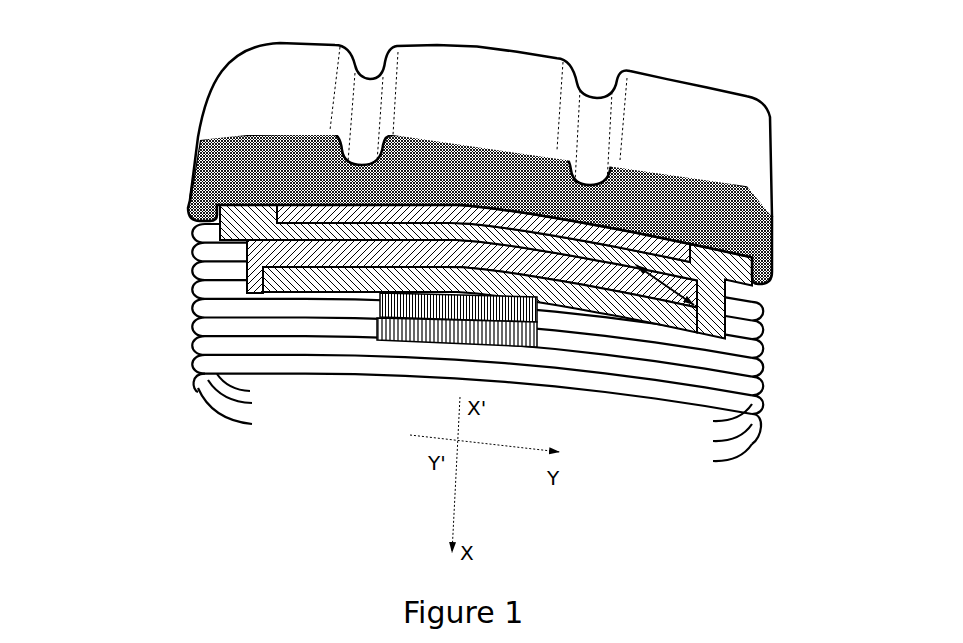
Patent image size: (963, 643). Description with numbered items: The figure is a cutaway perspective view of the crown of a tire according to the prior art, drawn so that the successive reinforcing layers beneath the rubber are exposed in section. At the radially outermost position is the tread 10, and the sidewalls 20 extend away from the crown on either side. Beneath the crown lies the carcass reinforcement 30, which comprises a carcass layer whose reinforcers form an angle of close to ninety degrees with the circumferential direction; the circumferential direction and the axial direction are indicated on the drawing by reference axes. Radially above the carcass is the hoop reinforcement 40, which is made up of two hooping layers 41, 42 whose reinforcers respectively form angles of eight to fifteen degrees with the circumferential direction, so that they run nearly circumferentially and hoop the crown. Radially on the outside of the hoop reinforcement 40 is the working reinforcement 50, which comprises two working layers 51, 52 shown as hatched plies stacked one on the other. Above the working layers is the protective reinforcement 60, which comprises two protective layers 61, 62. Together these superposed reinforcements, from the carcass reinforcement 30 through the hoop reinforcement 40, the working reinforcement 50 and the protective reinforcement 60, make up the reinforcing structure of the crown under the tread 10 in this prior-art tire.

The tread 10 is at (683, 110).
The sidewalls 20 is at (197, 148).
The carcass reinforcement 30 is at (757, 405).
The hoop reinforcement 40 is at (381, 425).
The hooping layer 41 is at (387, 343).
The hooping layer 42 is at (440, 319).
The working reinforcement 50 is at (356, 268).
The working layer 51 is at (283, 278).
The working layer 52 is at (283, 247).
The protective reinforcement 60 is at (570, 298).
The protective layer 61 is at (702, 308).
The protective layer 62 is at (697, 264).